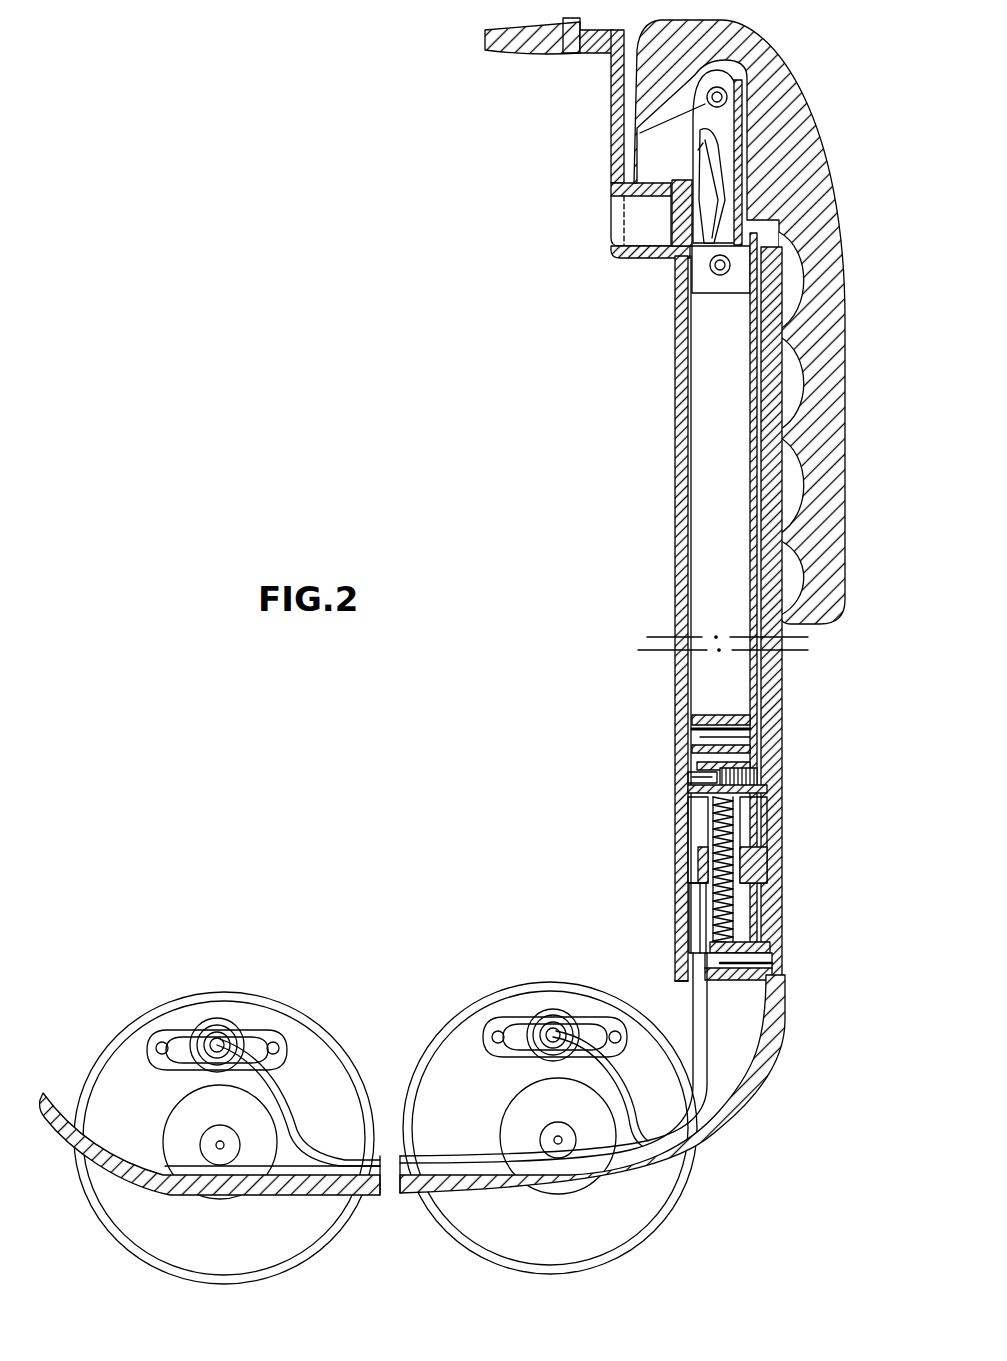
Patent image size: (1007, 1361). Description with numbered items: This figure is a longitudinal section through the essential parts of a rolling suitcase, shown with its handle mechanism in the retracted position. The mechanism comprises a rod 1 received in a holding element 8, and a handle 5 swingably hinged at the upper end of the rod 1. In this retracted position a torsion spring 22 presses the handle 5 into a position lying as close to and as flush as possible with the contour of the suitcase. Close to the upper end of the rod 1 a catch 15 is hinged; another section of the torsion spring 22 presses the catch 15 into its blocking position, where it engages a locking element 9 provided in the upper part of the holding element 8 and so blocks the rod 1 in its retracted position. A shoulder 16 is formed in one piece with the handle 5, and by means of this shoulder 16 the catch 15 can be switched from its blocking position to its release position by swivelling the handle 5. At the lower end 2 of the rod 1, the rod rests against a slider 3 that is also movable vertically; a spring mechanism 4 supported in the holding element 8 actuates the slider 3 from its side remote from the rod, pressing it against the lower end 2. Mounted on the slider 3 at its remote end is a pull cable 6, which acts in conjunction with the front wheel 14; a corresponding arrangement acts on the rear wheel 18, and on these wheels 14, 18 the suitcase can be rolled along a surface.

The rod 1 is at (705, 484).
The lower end of rod 2 is at (690, 785).
The slider 3 is at (690, 818).
The spring mechanism 4 is at (740, 908).
The handle 5 is at (797, 174).
The pull cable 6 is at (690, 910).
The holding element 8 is at (676, 400).
The locking element 9 is at (672, 207).
The wheels 14 is at (620, 1238).
The catch 15 is at (627, 247).
The shoulder 16 is at (645, 147).
The wheel 18 is at (165, 1246).
The torsion spring 22 is at (748, 68).